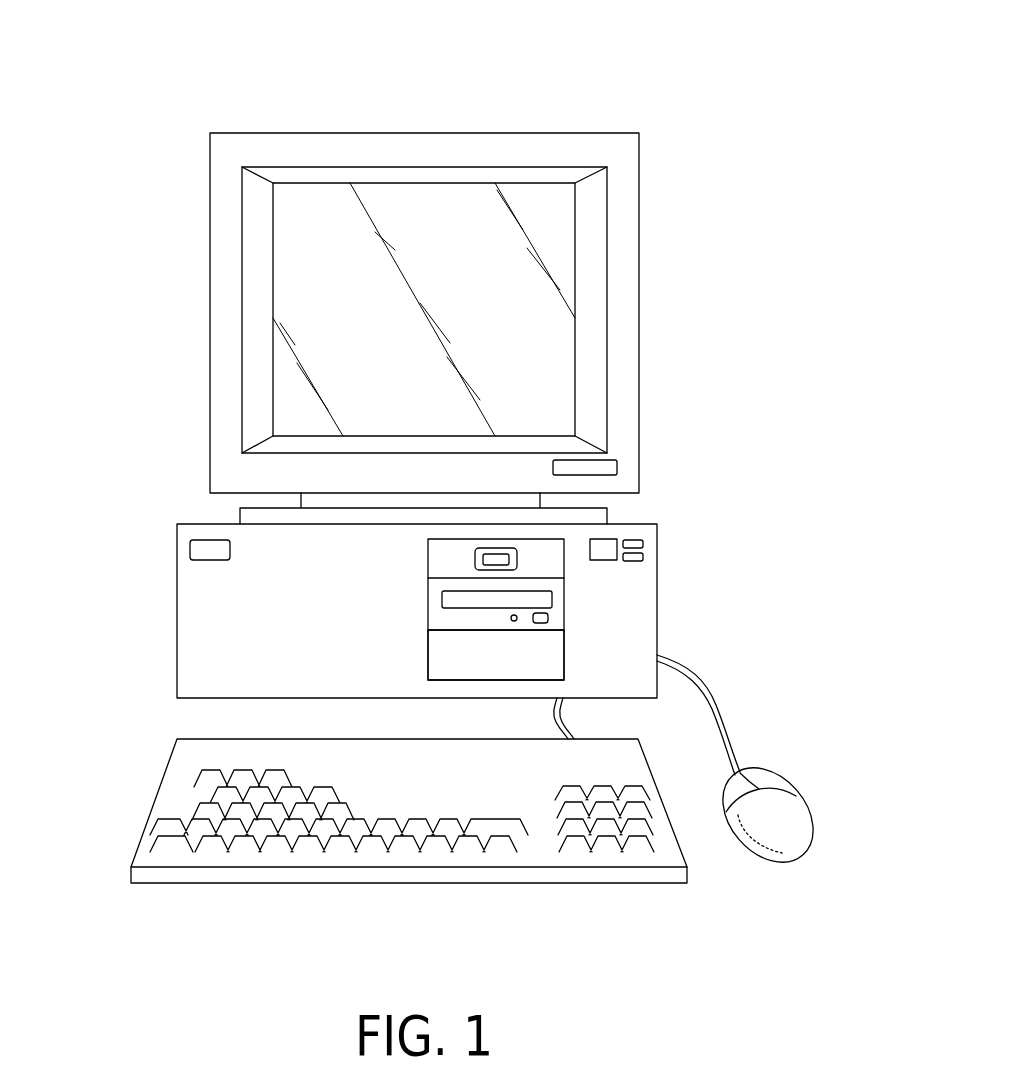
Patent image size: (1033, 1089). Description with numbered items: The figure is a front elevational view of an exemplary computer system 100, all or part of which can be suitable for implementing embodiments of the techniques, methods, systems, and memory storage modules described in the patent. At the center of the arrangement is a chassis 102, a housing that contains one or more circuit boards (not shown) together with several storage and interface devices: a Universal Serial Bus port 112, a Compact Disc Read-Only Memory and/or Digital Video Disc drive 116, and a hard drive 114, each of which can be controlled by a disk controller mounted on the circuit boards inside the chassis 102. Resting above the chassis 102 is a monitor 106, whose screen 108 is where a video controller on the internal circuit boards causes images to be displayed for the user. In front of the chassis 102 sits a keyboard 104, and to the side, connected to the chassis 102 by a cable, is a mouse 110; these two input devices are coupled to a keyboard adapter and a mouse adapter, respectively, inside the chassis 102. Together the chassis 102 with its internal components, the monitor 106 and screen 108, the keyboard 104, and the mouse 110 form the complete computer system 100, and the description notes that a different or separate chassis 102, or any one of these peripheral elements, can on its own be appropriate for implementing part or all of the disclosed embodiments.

The computer system 100 is at (630, 105).
The chassis 102 is at (177, 612).
The keyboard 104 is at (155, 800).
The monitor 106 is at (298, 133).
The screen 108 is at (327, 316).
The mouse 110 is at (790, 802).
The Universal Serial Bus (USB) port 112 is at (517, 555).
The hard drive 114 is at (553, 654).
The Compact Disc Read-Only Memory (CD-ROM) and/or Digital Video Disc (DVD) drive 116 is at (553, 607).